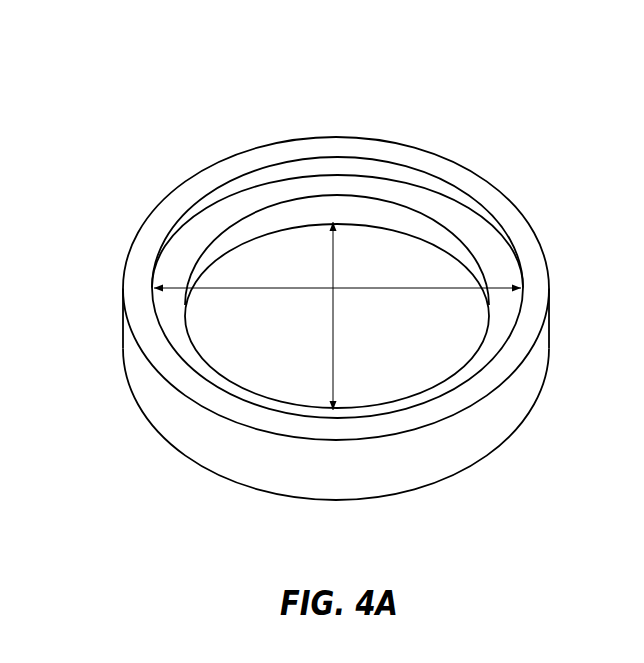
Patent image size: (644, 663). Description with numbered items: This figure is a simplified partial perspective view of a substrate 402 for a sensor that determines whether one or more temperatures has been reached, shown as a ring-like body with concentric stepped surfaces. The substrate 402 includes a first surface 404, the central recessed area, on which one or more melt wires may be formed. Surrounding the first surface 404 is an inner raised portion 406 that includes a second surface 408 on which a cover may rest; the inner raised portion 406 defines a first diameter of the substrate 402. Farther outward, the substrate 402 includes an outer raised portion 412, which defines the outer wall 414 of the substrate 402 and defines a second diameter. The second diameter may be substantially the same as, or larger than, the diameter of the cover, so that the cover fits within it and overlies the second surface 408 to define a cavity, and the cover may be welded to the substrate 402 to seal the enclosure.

The substrate 402 is at (330, 262).
The first surface 404 is at (292, 358).
The inner raised portion 406 is at (286, 220).
The second surface 408 is at (487, 243).
The outer raised portion 412 is at (402, 176).
The outer wall 414 is at (502, 412).